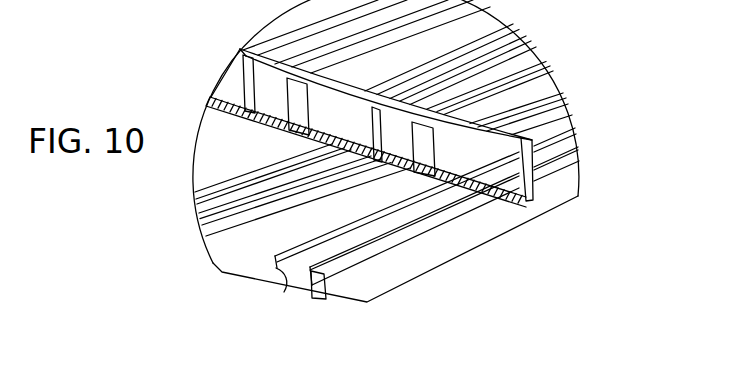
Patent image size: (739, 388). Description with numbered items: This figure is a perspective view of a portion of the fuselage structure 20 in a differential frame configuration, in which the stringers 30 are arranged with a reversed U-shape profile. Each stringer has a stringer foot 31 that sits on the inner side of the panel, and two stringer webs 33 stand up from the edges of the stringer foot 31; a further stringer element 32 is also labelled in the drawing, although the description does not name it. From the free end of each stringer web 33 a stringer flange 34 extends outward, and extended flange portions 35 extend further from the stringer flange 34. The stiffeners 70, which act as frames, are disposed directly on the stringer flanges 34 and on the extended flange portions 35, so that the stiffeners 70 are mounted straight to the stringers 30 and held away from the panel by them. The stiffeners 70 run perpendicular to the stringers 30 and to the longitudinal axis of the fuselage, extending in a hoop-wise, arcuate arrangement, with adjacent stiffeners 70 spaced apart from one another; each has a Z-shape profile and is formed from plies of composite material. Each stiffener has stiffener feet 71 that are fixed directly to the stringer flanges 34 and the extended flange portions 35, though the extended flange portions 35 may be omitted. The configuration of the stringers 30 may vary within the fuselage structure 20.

The fuselage structure 20 is at (90, 387).
The stringers 30 is at (525, 58).
The stringer foot 31 is at (298, 290).
The slot 32 is at (313, 283).
The stringer webs 33 is at (283, 286).
The stringer flange 34 is at (350, 255).
The extended flange portions 35 is at (380, 160).
The stiffeners 70 is at (392, 166).
The stiffener feet 71 is at (292, 135).